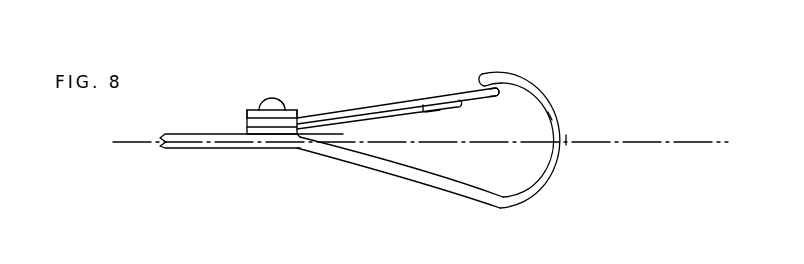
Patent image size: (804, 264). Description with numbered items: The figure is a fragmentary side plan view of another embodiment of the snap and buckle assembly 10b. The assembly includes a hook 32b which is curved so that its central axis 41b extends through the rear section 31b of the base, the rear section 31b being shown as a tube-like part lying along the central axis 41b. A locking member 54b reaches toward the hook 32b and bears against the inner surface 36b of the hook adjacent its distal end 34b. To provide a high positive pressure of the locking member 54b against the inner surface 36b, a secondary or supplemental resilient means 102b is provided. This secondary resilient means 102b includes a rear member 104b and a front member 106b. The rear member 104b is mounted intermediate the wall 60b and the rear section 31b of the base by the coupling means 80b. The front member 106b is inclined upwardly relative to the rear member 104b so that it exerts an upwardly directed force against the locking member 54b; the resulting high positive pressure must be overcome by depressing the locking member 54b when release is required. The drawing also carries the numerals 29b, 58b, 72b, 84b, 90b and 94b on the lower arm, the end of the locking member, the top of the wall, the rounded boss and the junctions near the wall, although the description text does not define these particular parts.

The snap and buckle assembly 10b is at (570, 92).
The lower arm 29b is at (424, 181).
The rear section 31b is at (215, 148).
The hook 32b is at (566, 139).
The distal end 34b is at (481, 80).
The inner surface 36b is at (548, 117).
The central axis 41b is at (668, 142).
The locking member 54b is at (394, 106).
The upper arm end 58b is at (508, 90).
The wall 60b is at (247, 124).
The block top edge 72b is at (245, 107).
The coupling means 80b is at (283, 98).
The boss 84b is at (276, 99).
The arm junction 90b is at (305, 113).
The lower arm junction 94b is at (300, 120).
The secondary resilient means 102b is at (438, 102).
The rear member 104b is at (276, 130).
The front member 106b is at (431, 112).